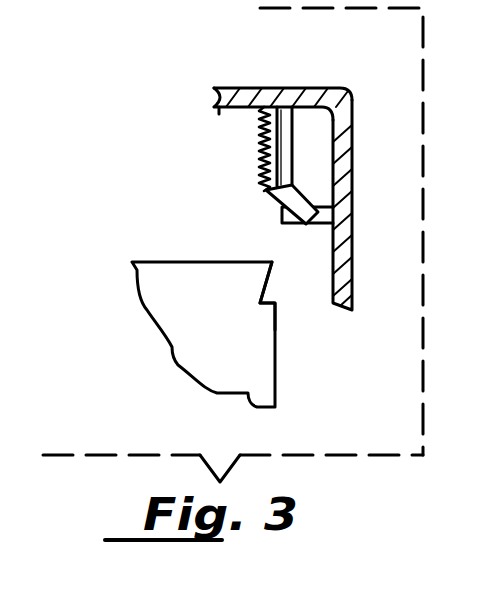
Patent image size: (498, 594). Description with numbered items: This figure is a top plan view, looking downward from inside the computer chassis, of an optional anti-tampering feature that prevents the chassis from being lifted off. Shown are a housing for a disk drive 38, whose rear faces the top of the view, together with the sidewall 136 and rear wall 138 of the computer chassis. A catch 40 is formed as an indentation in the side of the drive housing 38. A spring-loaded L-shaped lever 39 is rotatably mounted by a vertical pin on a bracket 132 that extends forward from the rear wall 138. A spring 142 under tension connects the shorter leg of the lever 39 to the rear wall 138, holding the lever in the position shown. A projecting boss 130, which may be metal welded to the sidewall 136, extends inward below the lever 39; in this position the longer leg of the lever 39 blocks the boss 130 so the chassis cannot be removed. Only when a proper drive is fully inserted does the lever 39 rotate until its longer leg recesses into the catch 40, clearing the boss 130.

The rear wall 138 is at (275, 97).
The sidewall 136 is at (352, 203).
The spring 142 is at (262, 138).
The bracket 132 is at (283, 153).
The projecting boss 130 is at (294, 219).
The L-shaped lever 39 is at (264, 195).
The drive housing 38 is at (175, 362).
The catch 40 is at (270, 287).